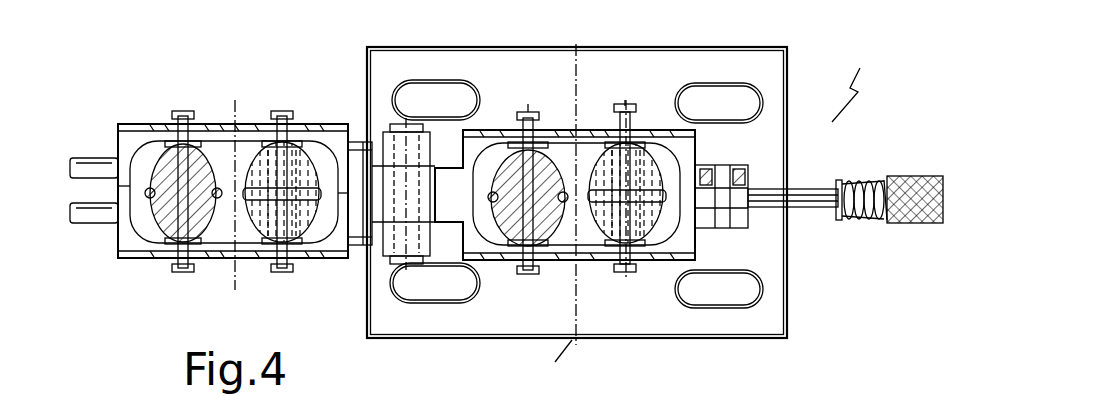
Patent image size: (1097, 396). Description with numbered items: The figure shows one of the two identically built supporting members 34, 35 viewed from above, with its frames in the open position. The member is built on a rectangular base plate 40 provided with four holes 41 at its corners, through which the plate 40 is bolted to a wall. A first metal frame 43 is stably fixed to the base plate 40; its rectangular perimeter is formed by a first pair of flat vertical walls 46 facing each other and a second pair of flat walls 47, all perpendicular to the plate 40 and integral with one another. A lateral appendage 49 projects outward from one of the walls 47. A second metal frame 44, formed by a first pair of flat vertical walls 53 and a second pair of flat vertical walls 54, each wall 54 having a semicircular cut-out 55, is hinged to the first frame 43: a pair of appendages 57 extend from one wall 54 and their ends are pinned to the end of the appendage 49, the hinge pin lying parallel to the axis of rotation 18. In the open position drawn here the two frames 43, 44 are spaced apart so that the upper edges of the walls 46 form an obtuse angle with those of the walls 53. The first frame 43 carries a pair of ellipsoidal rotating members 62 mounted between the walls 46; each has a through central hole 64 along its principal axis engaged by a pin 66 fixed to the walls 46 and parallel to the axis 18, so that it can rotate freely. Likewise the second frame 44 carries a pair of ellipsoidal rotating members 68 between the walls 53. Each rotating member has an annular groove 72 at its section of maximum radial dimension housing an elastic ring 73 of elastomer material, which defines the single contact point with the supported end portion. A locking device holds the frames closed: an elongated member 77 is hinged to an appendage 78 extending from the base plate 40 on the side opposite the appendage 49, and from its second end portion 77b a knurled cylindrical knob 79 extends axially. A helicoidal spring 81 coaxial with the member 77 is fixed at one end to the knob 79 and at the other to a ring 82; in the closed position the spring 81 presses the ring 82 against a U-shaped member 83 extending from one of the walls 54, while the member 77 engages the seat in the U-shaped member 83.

The axis of rotation 18 is at (555, 366).
The supporting member 34 is at (880, 80).
The supporting member 35 is at (880, 80).
The rectangular base plate 40 is at (701, 58).
The holes 41 is at (428, 96).
The first metal frame 43 is at (636, 104).
The second metal frame 44 is at (146, 275).
The first pair of flat vertical walls 46 is at (556, 126).
The second pair of flat walls 47 is at (683, 165).
The lateral appendage 49 is at (447, 180).
The first pair of flat vertical walls 53 is at (308, 132).
The second pair of flat vertical walls 54 is at (118, 186).
The semicircular cut-out 55 is at (243, 262).
The appendages 57 is at (388, 150).
The rotating members 62 is at (527, 262).
The through central hole 64 is at (620, 258).
The pin 66 is at (528, 116).
The rotating members 68 is at (160, 162).
The annular groove 72 is at (512, 250).
The elastic ring 73 is at (640, 198).
The elongated member 77 is at (815, 207).
The second end portion 77b is at (888, 220).
The appendage 78 is at (770, 168).
The knurled cylindrical knob 79 is at (915, 176).
The helicoidal spring 81 is at (864, 181).
The ring 82 is at (840, 220).
The U-shaped member 83 is at (96, 170).